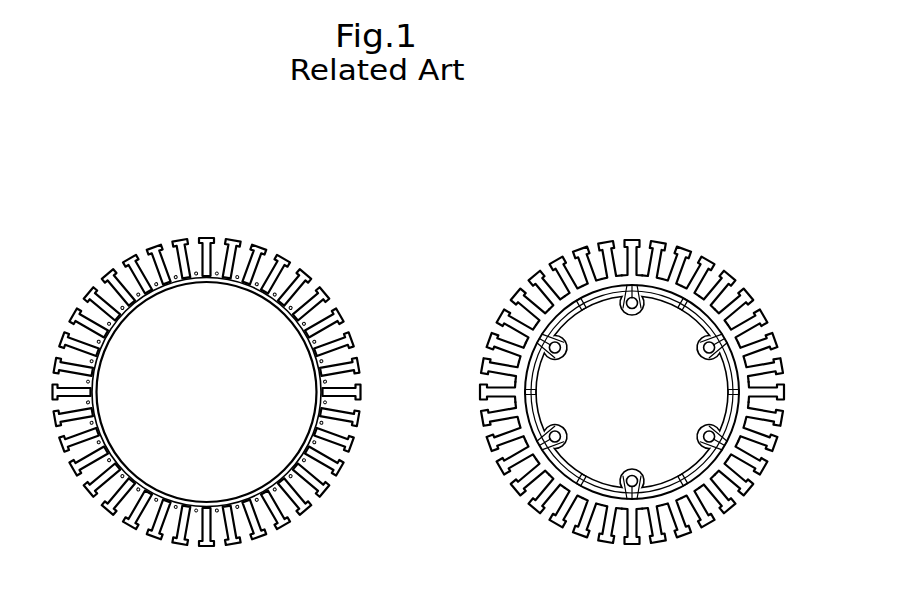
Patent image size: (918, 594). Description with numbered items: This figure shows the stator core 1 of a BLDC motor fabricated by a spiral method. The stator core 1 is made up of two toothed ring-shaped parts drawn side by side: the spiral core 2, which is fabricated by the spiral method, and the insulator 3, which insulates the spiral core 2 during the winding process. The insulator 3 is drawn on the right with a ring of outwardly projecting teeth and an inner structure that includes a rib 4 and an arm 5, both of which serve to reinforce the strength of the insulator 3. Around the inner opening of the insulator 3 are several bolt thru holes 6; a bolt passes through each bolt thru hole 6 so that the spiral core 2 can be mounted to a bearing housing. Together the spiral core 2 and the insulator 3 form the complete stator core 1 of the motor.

The stator core 1 is at (360, 223).
The spiral core 2 is at (300, 273).
The insulator 3 is at (778, 371).
The rib 4 is at (726, 285).
The arm 5 is at (746, 308).
The bolt thru hole 6 is at (718, 345).